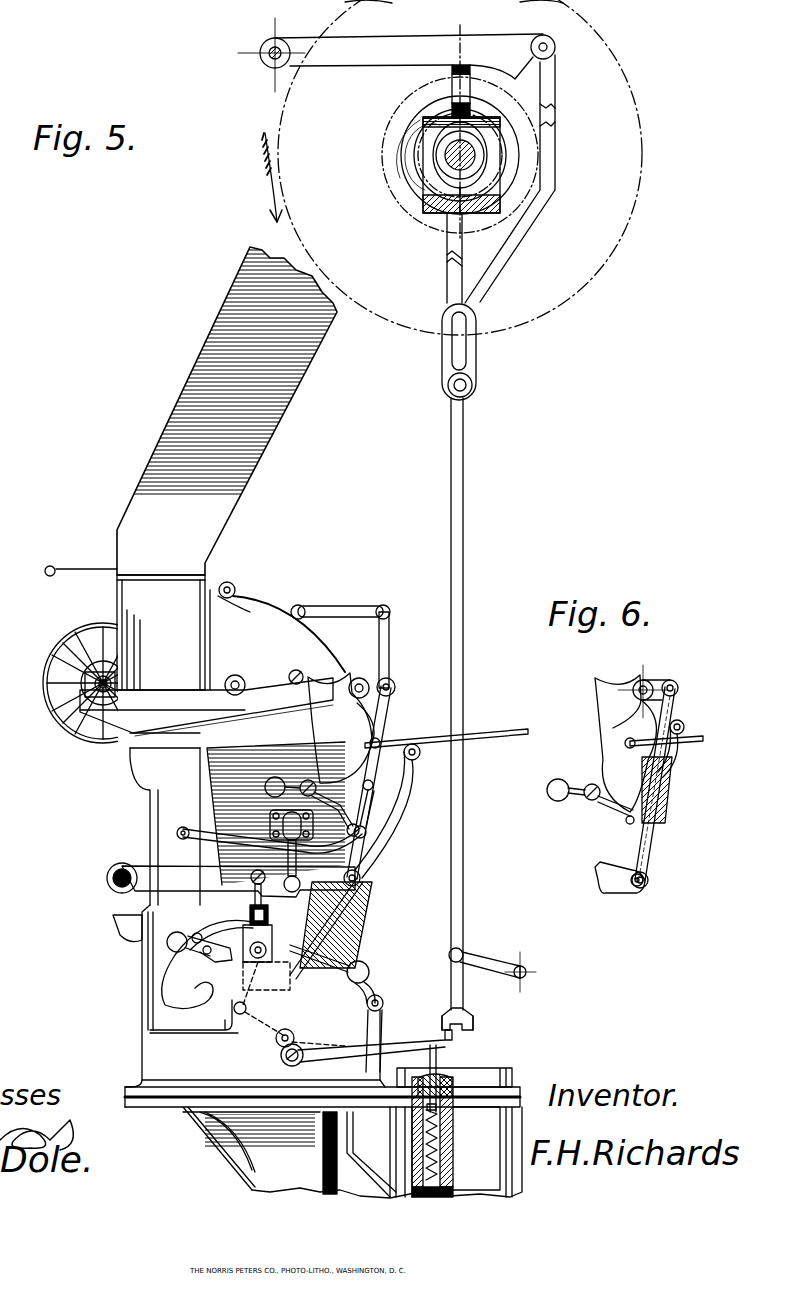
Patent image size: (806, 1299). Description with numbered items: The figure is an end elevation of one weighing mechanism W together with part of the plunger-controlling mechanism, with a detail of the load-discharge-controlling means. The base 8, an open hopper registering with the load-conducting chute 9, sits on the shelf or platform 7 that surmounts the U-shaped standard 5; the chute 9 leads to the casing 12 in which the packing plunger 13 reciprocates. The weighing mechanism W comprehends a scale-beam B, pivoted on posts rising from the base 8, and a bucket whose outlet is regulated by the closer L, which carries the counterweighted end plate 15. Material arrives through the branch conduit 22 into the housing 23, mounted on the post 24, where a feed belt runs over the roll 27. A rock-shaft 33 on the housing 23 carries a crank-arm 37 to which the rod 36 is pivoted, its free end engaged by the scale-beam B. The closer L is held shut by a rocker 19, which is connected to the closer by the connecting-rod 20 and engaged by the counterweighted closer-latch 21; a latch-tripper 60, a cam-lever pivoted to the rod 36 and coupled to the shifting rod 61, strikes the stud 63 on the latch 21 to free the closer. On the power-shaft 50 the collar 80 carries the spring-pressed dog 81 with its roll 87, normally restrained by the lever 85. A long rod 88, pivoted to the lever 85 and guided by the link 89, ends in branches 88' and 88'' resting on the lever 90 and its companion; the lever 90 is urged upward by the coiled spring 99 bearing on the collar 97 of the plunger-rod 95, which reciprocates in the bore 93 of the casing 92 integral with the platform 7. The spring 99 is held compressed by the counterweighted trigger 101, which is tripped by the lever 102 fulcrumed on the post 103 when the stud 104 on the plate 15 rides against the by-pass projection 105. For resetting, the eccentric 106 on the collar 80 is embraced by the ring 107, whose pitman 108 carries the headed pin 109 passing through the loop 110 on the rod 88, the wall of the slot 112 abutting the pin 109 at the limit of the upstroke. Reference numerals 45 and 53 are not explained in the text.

In FIG. 5, the lever 85 is at (390, 48).
In FIG. 5, the roll 87 is at (452, 70).
In FIG. 5, the dog 81 is at (452, 89).
In FIG. 5, the band or collar 80 is at (503, 165).
In FIG. 5, the power-shaft 50 is at (444, 155).
In FIG. 5, the ring 107 is at (405, 176).
In FIG. 5, the eccentric 106 is at (425, 184).
In FIG. 5, the rod 88 is at (498, 542).
In FIG. 5, the branch of rod 88' is at (425, 1017).
In FIG. 5, the branch of rod 88'' is at (495, 1017).
In FIG. 5, the pitman 108 is at (447, 256).
In FIG. 5, the elongated loop 110 is at (442, 346).
In FIG. 5, the longitudinal slot 112 is at (456, 356).
In FIG. 5, the pin or bolt 109 is at (452, 393).
In FIG. 5, the guide or link 89 is at (482, 960).
In FIG. 5, the branch pipe or conduit 22 is at (160, 437).
In FIG. 5, the housing or hood 23 is at (163, 632).
In FIG. 5, the pivot 53 is at (232, 586).
In FIG. 5, the wheel 45 is at (62, 642).
In FIG. 5, the supporting roll or drum 27 is at (82, 680).
In FIG. 5, the post 24 is at (150, 795).
In FIG. 5, the rock-shaft 33 is at (359, 679).
In FIG. 6, the rock-shaft 33 is at (638, 686).
In FIG. 5, the crank-arm 37 is at (388, 679).
In FIG. 6, the crank-arm 37 is at (666, 680).
In FIG. 5, the rod 36 is at (384, 719).
In FIG. 6, the rod 36 is at (671, 712).
In FIG. 5, the shifting rod or link 61 is at (489, 732).
In FIG. 6, the shifting rod or link 61 is at (692, 737).
In FIG. 5, the connecting-rod 20 is at (400, 803).
In FIG. 6, the connecting-rod 20 is at (678, 766).
In FIG. 5, the latch-tripper 60 is at (372, 815).
In FIG. 6, the latch-tripper 60 is at (660, 813).
In FIG. 5, the rocker 19 is at (341, 728).
In FIG. 6, the rocker 19 is at (606, 760).
In FIG. 5, the closer-latch 21 is at (322, 800).
In FIG. 6, the closer-latch 21 is at (606, 806).
In FIG. 5, the scale-beam B is at (231, 880).
In FIG. 6, the scale-beam B is at (607, 879).
In FIG. 5, the weighing mechanism W is at (342, 927).
In FIG. 5, the latch or trigger 101 is at (381, 1028).
In FIG. 5, the base 8 is at (150, 1052).
In FIG. 5, the end plate 15 is at (165, 988).
In FIG. 5, the projection or stud 104 is at (186, 936).
In FIG. 5, the by-pass projection 105 is at (172, 948).
In FIG. 5, the post 103 is at (243, 972).
In FIG. 5, the counterweighted lever 102 is at (263, 1011).
In FIG. 5, the closer L is at (277, 1036).
In FIG. 5, the lever 90 is at (366, 1053).
In FIG. 5, the plunger-rod 95 is at (437, 1050).
In FIG. 5, the shelf or platform 7 is at (146, 1100).
In FIG. 5, the packing device or plunger 13 is at (500, 1068).
In FIG. 5, the load-conducting chute 9 is at (232, 1143).
In FIG. 5, the U-shaped standard 5 is at (265, 1170).
In FIG. 5, the casing 12 is at (392, 1165).
In FIG. 5, the collar 97 is at (404, 1116).
In FIG. 5, the chambered enlargement or casing 92 is at (462, 1137).
In FIG. 5, the coiled spring 99 is at (440, 1152).
In FIG. 5, the bore 93 is at (440, 1178).
In FIG. 6, the pin or stud 63 is at (626, 824).